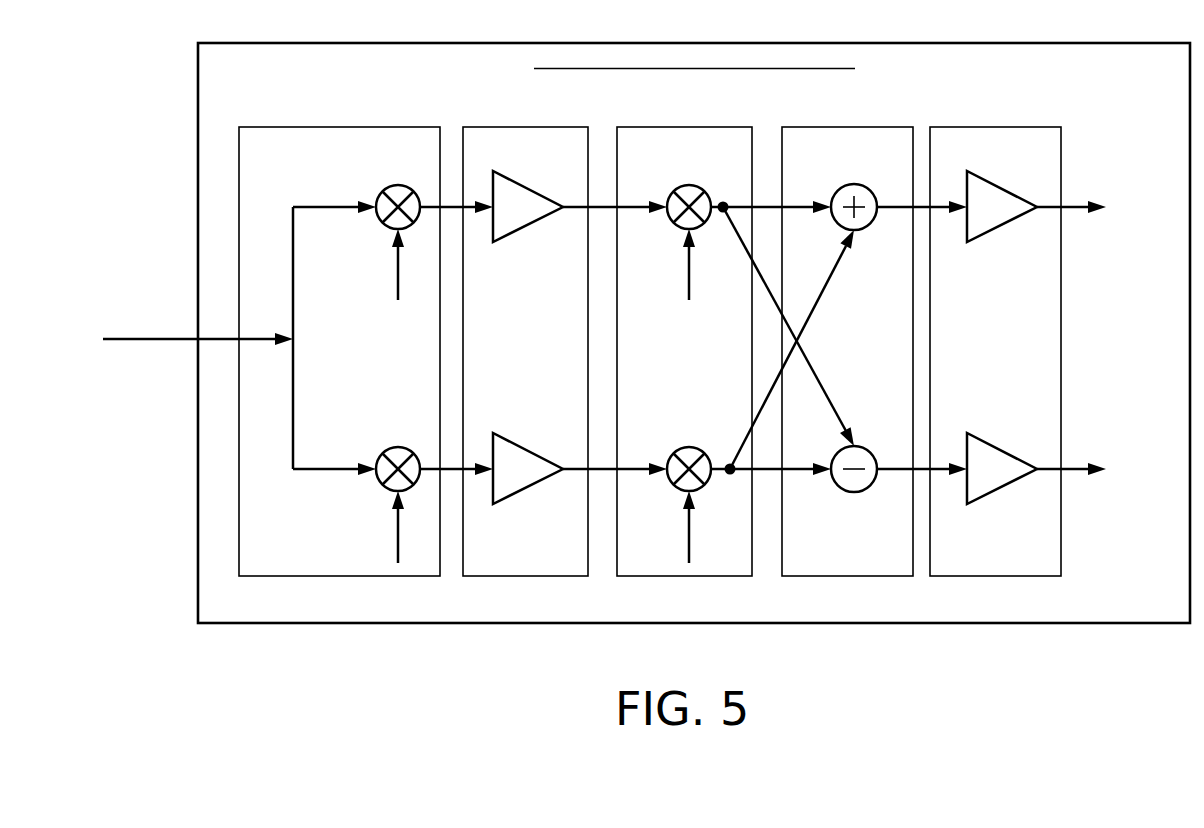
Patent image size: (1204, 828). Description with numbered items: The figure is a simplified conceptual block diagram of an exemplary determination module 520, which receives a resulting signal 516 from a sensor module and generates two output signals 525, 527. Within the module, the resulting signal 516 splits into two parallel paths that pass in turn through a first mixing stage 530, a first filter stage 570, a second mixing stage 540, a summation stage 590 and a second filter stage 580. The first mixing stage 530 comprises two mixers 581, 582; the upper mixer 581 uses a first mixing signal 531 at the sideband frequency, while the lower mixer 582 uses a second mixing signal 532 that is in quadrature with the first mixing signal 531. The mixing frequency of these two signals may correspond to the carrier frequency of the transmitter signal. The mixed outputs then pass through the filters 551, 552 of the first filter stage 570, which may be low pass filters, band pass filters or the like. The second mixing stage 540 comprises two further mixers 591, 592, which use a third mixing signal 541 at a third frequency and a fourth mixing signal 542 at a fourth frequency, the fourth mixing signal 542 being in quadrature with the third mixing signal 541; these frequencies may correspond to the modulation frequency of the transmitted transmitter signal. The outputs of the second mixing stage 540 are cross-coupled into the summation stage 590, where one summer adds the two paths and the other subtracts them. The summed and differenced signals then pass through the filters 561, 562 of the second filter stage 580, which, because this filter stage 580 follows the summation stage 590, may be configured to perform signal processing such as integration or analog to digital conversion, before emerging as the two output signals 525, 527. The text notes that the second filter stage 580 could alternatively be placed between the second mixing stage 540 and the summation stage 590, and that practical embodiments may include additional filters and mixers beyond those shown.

The resulting signal 516 is at (164, 338).
The determination module 520 is at (503, 43).
The output signal 525 is at (1100, 205).
The output signal 527 is at (1102, 468).
The mixing stage 530 is at (380, 127).
The first mixing signal 531 is at (398, 289).
The second mixing signal 532 is at (398, 547).
The mixing stage 540 is at (686, 127).
The third mixing signal 541 is at (689, 280).
The fourth mixing signal 542 is at (689, 548).
The filter 551 is at (530, 180).
The filter 552 is at (546, 427).
The filter 561 is at (1010, 164).
The filter 562 is at (1012, 428).
The filter stage 570 is at (520, 127).
The filter stage 580 is at (996, 127).
The mixer 581 is at (396, 186).
The mixer 582 is at (394, 448).
The summation stage 590 is at (862, 127).
The mixer 591 is at (684, 186).
The mixer 592 is at (685, 448).